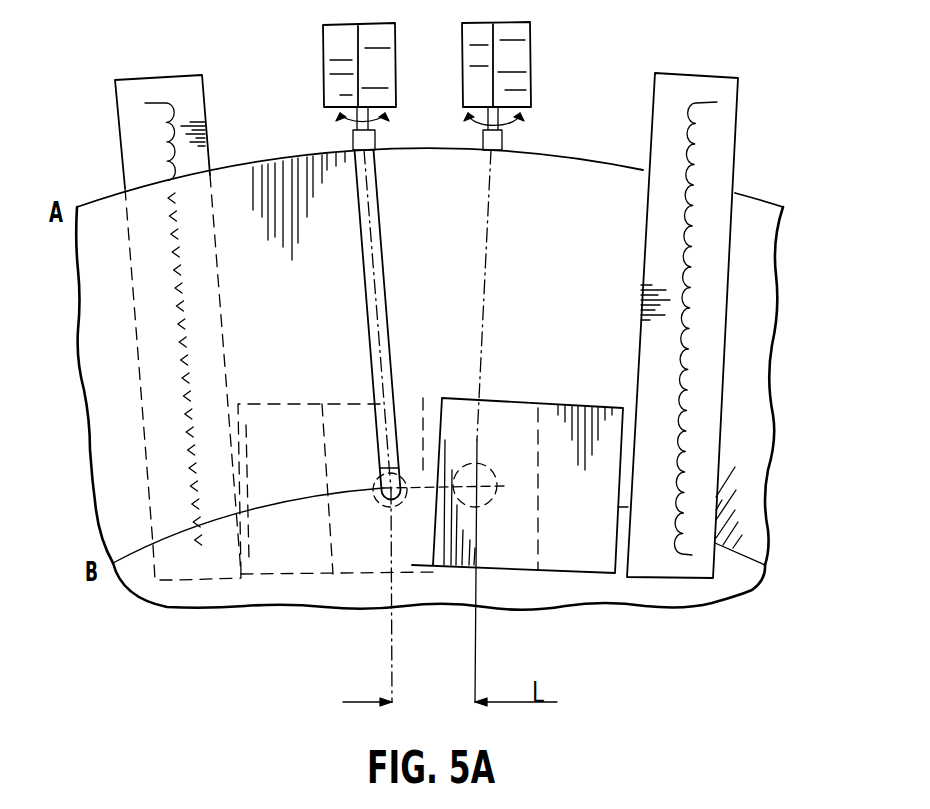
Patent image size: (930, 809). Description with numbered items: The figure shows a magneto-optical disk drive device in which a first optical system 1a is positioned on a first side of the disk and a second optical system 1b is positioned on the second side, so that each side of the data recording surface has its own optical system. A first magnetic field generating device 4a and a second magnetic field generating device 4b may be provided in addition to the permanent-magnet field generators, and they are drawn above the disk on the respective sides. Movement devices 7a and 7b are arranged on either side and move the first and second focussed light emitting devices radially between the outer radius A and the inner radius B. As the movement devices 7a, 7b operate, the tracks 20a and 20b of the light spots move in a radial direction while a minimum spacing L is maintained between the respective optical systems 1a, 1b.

The first optical system 1a is at (305, 574).
The second optical system 1b is at (572, 573).
The first magnetic field generating device 4a is at (378, 84).
The second magnetic field generating device 4b is at (517, 42).
The movement device 7a is at (146, 149).
The movement device 7b is at (717, 160).
The track of the light spot 20a is at (368, 242).
The track of the light spot 20b is at (483, 328).